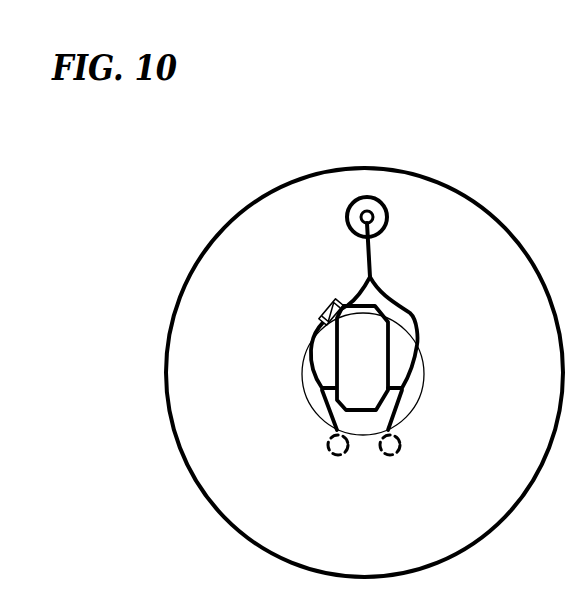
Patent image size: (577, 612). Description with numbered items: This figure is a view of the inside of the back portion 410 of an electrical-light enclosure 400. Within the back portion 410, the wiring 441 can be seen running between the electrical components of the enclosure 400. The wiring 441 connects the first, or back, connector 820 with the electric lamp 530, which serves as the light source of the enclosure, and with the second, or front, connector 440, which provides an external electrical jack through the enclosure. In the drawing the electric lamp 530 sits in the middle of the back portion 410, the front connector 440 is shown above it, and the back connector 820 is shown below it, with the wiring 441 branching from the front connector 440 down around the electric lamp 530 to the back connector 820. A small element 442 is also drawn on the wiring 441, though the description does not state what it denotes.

The electrical-light enclosure 400 is at (345, 353).
The back portion 410 is at (205, 243).
The front connector 440 is at (387, 228).
The wiring 441 is at (312, 342).
The clip 442 is at (322, 304).
The electric lamp 530 is at (388, 345).
The back connector 820 is at (398, 458).